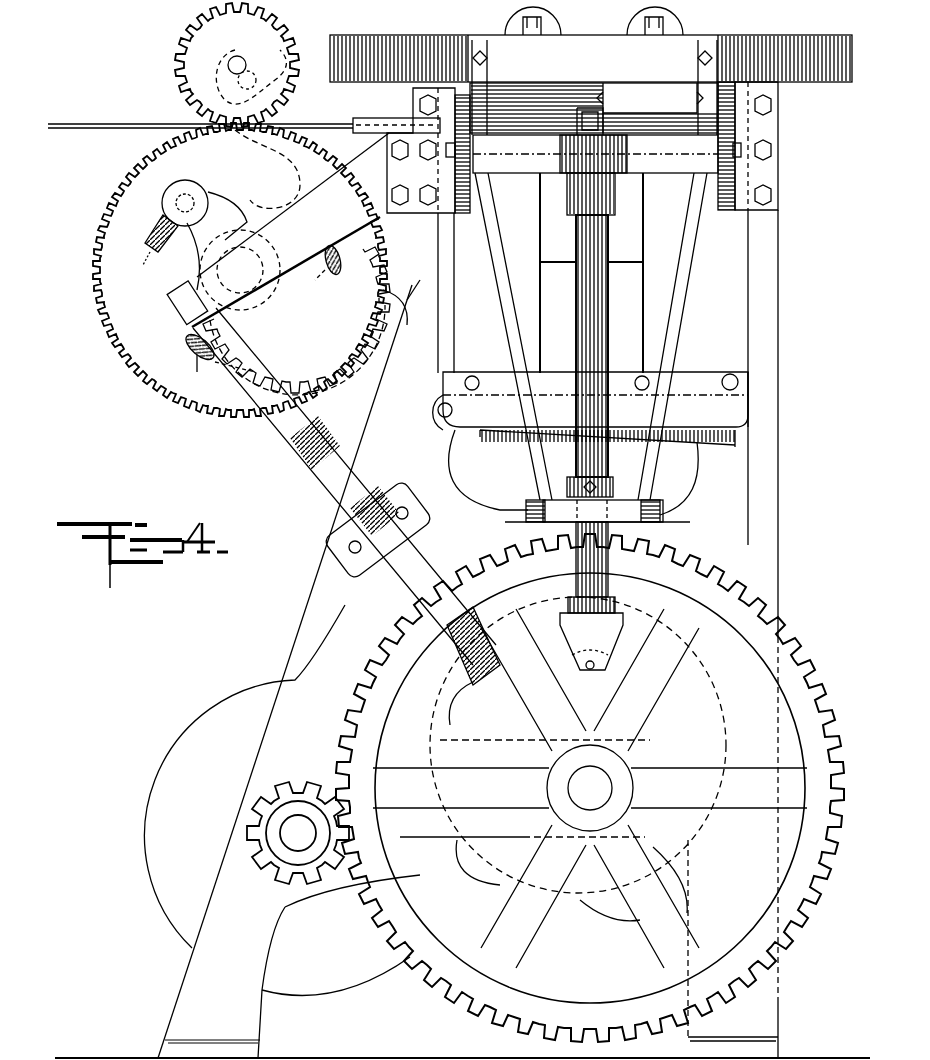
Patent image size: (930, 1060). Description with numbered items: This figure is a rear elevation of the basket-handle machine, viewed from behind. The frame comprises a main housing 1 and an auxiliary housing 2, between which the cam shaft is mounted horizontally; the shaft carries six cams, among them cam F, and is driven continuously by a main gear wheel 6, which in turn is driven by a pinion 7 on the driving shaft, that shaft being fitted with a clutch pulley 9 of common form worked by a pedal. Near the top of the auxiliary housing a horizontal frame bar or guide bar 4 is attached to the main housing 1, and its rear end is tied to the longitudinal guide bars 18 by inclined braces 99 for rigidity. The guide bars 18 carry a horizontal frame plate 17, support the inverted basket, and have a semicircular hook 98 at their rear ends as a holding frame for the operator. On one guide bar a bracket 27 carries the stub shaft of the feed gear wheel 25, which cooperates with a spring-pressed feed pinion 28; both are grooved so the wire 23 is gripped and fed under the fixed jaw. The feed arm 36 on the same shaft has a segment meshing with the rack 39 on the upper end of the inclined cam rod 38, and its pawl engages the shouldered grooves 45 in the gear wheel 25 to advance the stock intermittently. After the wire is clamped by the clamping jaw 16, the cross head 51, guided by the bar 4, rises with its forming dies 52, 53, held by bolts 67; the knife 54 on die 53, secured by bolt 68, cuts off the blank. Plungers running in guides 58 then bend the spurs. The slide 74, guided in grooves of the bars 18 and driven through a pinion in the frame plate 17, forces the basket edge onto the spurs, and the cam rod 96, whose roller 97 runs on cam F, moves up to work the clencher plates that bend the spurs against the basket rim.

The main housing 1 is at (312, 575).
The auxiliary housing 2 is at (706, 556).
The guide bar 4 is at (660, 517).
The main gear wheel 6 is at (392, 668).
The pinion 7 is at (300, 795).
The clutch pulley 9 is at (347, 975).
The clamping jaw 16 is at (622, 262).
The frame plate 17 is at (672, 164).
The guide bars 18 is at (463, 215).
The wire 23 is at (138, 116).
The main gear wheel 25 is at (240, 270).
The bracket 27 is at (384, 258).
The feed pinion 28 is at (237, 65).
The feed arm 36 is at (197, 242).
The cam rod 38 is at (322, 452).
The rack 39 is at (266, 385).
The grooves 45 is at (332, 275).
The cross head 51 is at (713, 420).
The forming die 52 is at (725, 363).
The forming die 53 is at (595, 373).
The knife 54 is at (438, 318).
The guides 58 is at (552, 30).
The bolts 67 is at (730, 374).
The bolt 68 is at (443, 417).
The slide 74 is at (594, 108).
The cam rod 96 is at (605, 345).
The roller 97 is at (590, 672).
The semicircular hook 98 is at (776, 50).
The inclined braces 99 is at (495, 278).
The cam F is at (625, 672).